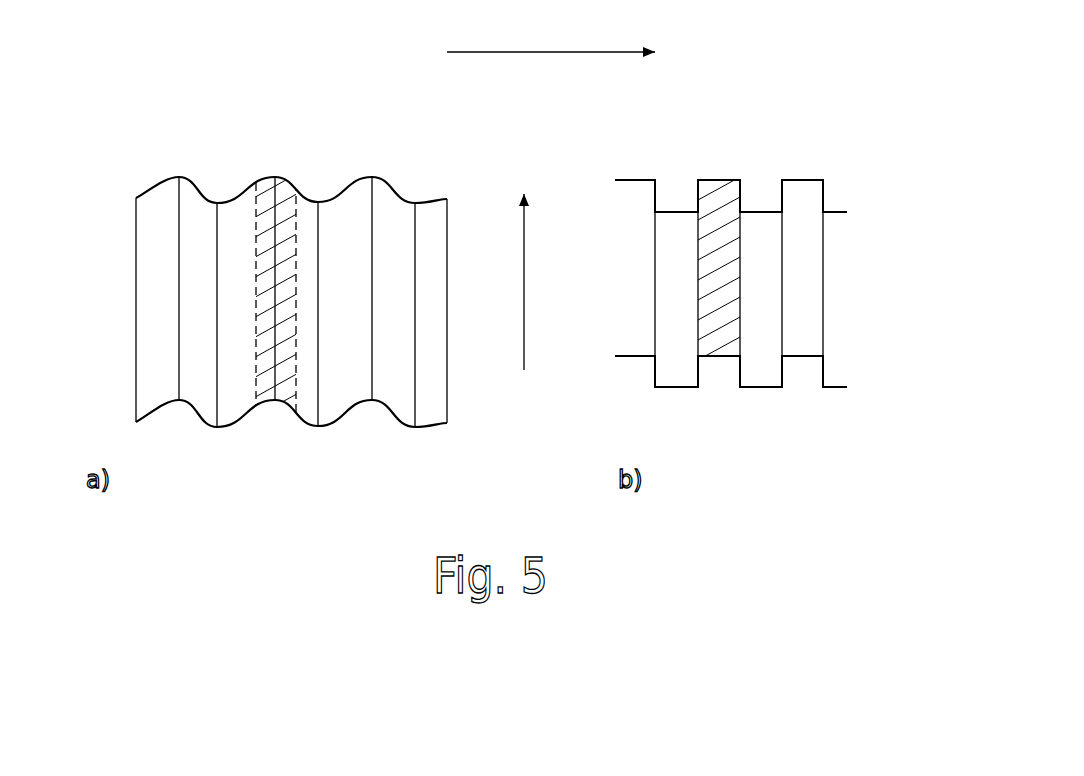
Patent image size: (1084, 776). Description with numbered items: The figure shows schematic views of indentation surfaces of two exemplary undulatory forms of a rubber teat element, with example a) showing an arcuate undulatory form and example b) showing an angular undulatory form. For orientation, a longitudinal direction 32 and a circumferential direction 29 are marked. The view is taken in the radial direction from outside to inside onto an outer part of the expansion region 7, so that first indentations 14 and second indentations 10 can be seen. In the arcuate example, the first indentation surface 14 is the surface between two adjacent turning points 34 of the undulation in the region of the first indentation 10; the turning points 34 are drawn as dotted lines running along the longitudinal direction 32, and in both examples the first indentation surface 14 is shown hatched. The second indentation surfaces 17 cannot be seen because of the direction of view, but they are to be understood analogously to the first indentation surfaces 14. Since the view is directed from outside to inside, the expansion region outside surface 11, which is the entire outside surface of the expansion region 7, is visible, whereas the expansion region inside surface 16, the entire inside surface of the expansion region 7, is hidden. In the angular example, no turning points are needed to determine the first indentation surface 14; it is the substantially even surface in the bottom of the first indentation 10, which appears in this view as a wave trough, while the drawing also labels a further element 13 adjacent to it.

The expansion region 7 is at (133, 278).
The first indentation 10 is at (275, 177).
The expansion region outside surface 11 is at (428, 408).
The valley / trough 13 is at (415, 203).
The first indentation surface 14 is at (288, 191).
The expansion region inside surface 16 is at (199, 187).
The second indentation surface 17 is at (422, 198).
The circumferential direction 29 is at (567, 54).
The longitudinal direction 32 is at (543, 282).
The turning points 34 is at (248, 410).